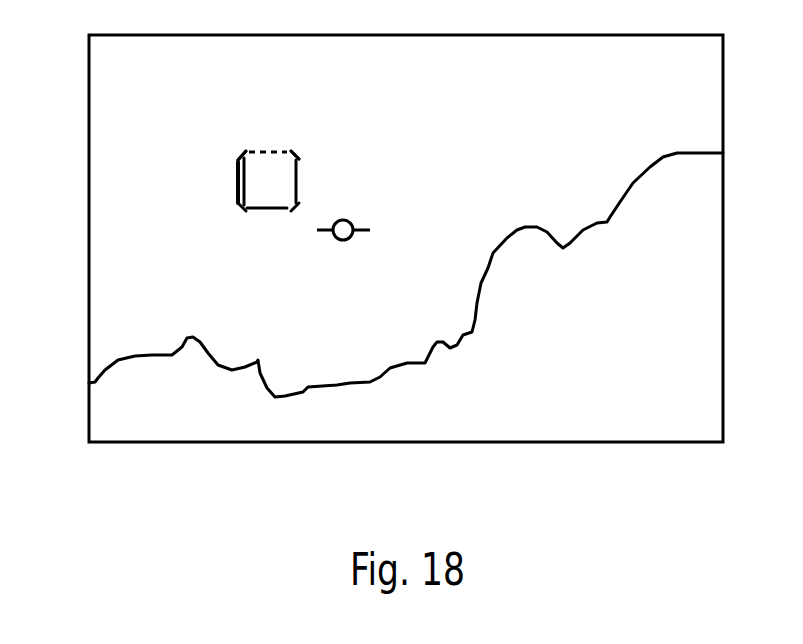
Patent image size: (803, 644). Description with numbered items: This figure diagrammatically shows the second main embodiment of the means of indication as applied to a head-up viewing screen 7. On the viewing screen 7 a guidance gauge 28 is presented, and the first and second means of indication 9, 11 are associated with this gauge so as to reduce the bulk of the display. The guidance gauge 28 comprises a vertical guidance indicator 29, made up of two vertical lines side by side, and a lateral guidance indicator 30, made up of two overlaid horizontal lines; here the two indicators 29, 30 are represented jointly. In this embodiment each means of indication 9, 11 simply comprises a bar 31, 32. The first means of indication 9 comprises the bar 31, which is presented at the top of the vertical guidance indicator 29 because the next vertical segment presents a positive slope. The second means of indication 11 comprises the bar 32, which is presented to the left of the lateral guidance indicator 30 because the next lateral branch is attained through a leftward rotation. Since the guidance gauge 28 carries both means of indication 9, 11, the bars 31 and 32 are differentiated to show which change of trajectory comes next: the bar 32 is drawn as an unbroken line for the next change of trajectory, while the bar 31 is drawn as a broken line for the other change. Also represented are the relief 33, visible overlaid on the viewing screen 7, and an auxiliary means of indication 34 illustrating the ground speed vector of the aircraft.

The head-up viewing screen 7 is at (543, 443).
The first means of indication 9 is at (273, 140).
The second means of indication 11 is at (216, 183).
The guidance gauge 28 is at (308, 132).
The vertical guidance indicator 29 is at (313, 185).
The lateral guidance indicator 30 is at (265, 217).
The bar 31 is at (248, 138).
The bar 32 is at (228, 168).
The relief 33 is at (477, 300).
The auxiliary means of indication 34 is at (357, 253).